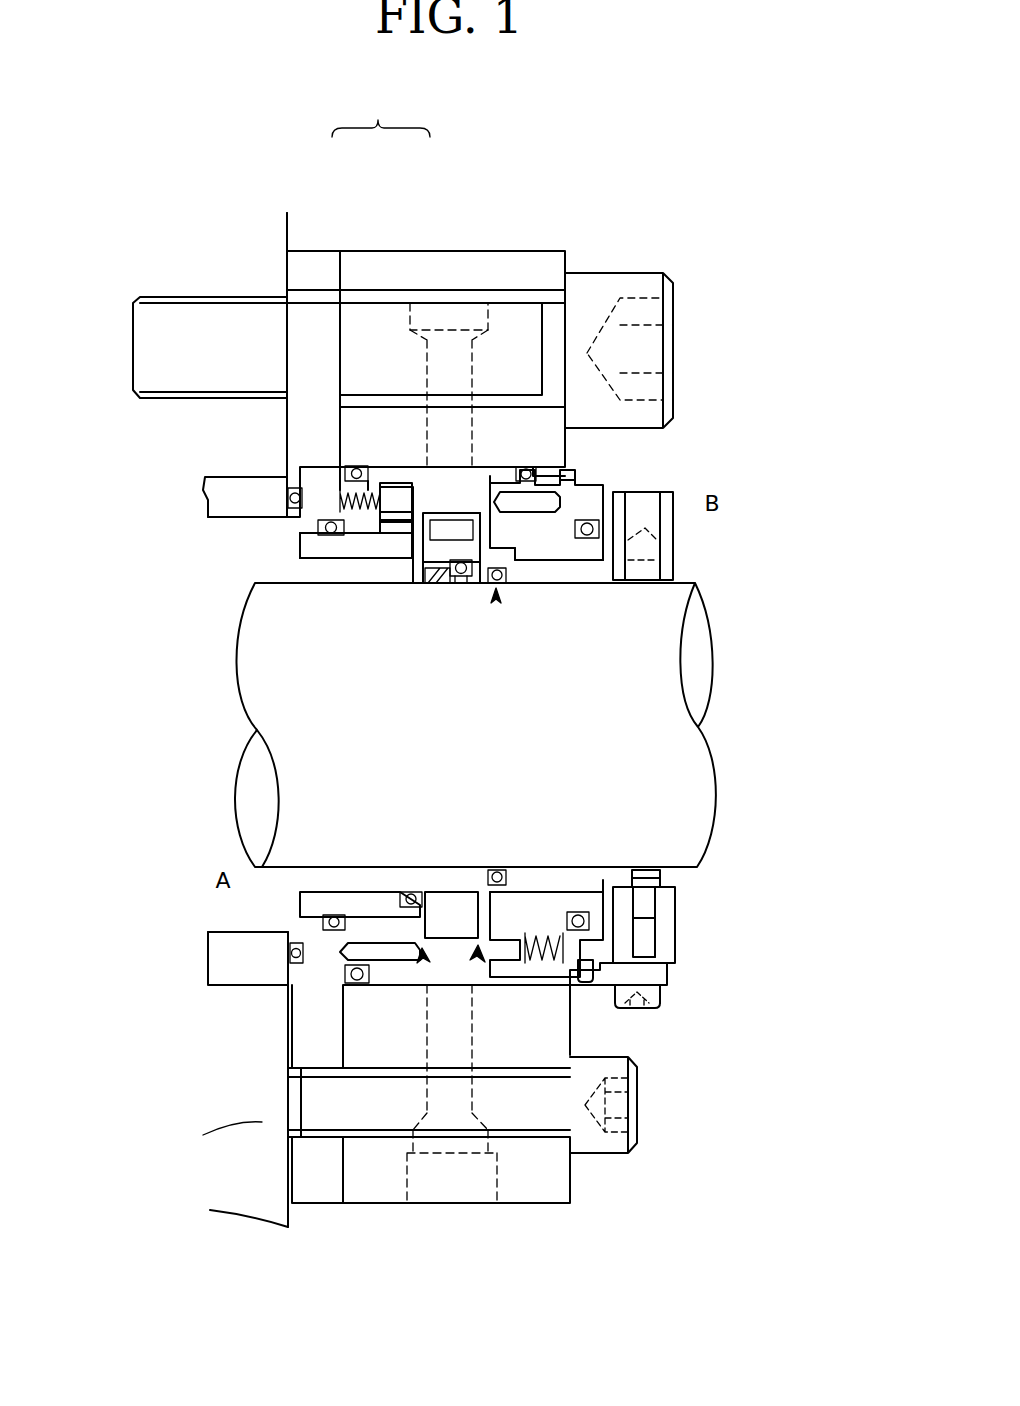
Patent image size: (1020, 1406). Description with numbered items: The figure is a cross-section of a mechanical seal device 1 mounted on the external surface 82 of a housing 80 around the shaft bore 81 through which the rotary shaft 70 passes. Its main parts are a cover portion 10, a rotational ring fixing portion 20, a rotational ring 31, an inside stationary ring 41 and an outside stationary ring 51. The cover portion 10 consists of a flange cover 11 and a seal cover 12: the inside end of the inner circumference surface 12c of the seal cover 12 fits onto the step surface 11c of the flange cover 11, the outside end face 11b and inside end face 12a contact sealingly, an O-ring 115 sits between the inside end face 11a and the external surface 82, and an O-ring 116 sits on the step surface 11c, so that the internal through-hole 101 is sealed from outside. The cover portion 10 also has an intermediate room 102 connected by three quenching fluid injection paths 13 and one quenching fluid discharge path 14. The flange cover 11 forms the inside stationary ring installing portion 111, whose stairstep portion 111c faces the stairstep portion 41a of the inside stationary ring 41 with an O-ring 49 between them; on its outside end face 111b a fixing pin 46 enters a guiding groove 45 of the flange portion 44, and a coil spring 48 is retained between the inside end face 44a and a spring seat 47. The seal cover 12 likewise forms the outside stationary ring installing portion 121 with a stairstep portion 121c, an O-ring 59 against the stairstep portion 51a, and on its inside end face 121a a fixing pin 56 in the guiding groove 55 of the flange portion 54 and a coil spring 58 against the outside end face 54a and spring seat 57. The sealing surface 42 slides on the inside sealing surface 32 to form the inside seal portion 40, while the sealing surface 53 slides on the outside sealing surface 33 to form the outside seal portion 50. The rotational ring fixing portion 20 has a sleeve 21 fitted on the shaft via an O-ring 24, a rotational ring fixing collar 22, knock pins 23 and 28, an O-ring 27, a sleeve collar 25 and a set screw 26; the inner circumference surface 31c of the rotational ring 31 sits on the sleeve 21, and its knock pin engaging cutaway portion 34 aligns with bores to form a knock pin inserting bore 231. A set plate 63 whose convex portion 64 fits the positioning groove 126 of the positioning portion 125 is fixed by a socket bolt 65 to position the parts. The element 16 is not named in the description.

The mechanical seal device 1 is at (758, 1212).
The cover portion 10 is at (381, 118).
The flange cover 11 is at (327, 265).
The inside end face 11a is at (237, 224).
The outside end face 11b is at (318, 300).
The step surface 11c is at (345, 450).
The seal cover 12 is at (385, 262).
The inside end face 12a is at (333, 365).
The inner circumference surface 12c is at (440, 485).
The quenching fluid injection path 13 is at (470, 265).
The quenching fluid discharge path 14 is at (445, 1180).
The bolt 16 is at (650, 288).
The rotational ring fixing portion 20 is at (497, 600).
The sleeve 21 is at (583, 593).
The rotational ring fixing collar 22 is at (430, 530).
The knock pin 23 is at (440, 545).
The knock pin inserting bore 231 is at (458, 583).
The O-ring 24 is at (497, 870).
The sleeve collar 25 is at (668, 910).
The set screw 26 is at (653, 563).
The O-ring 27 is at (460, 892).
The knock pin 28 is at (652, 897).
The rotational ring 31 is at (420, 583).
The inner circumference surface 31c is at (435, 893).
The inside sealing surface 32 is at (476, 560).
The outside sealing surface 33 is at (472, 578).
The knock pin engaging cutaway portion 34 is at (428, 575).
The inside seal portion 40 is at (420, 955).
The inside stationary ring 41 is at (322, 560).
The stairstep portion 41a is at (200, 968).
The sealing surface 42 is at (388, 520).
The flange portion 44 is at (340, 497).
The inside end face 44a is at (330, 545).
The guiding groove 45 is at (385, 920).
The fixing pin 46 is at (340, 955).
The spring seat 47 is at (318, 538).
The coil spring 48 is at (345, 500).
The O-ring 49 is at (302, 943).
The outside seal portion 50 is at (480, 952).
The outside stationary ring 51 is at (530, 560).
The stairstep portion 51a is at (605, 880).
The sealing surface 53 is at (500, 583).
The flange portion 54 is at (520, 920).
The outside end face 54a is at (537, 893).
The guiding groove 55 is at (543, 505).
The fixing pin 56 is at (583, 523).
The spring seat 57 is at (500, 990).
The coil spring 58 is at (560, 965).
The O-ring 59 is at (580, 912).
The set plate 63 is at (657, 977).
The convex portion 64 is at (587, 962).
The socket bolt 65 is at (658, 1007).
The rotary shaft 70 is at (312, 760).
The housing 80 is at (280, 1128).
The shaft bore 81 is at (210, 930).
The external surface 82 is at (290, 1010).
The internal through-hole 101 is at (300, 563).
The intermediate room 102 is at (500, 470).
The inside stationary ring installing portion 111 is at (203, 487).
The outside end face 111b is at (340, 445).
The stairstep portion 111c is at (300, 547).
The O-ring 115 is at (320, 925).
The O-ring 116 is at (355, 985).
The outside stationary ring installing portion 121 is at (697, 583).
The inside end face 121a is at (560, 480).
The stairstep portion 121c is at (607, 537).
The positioning portion 125 is at (653, 953).
The positioning groove 126 is at (655, 960).